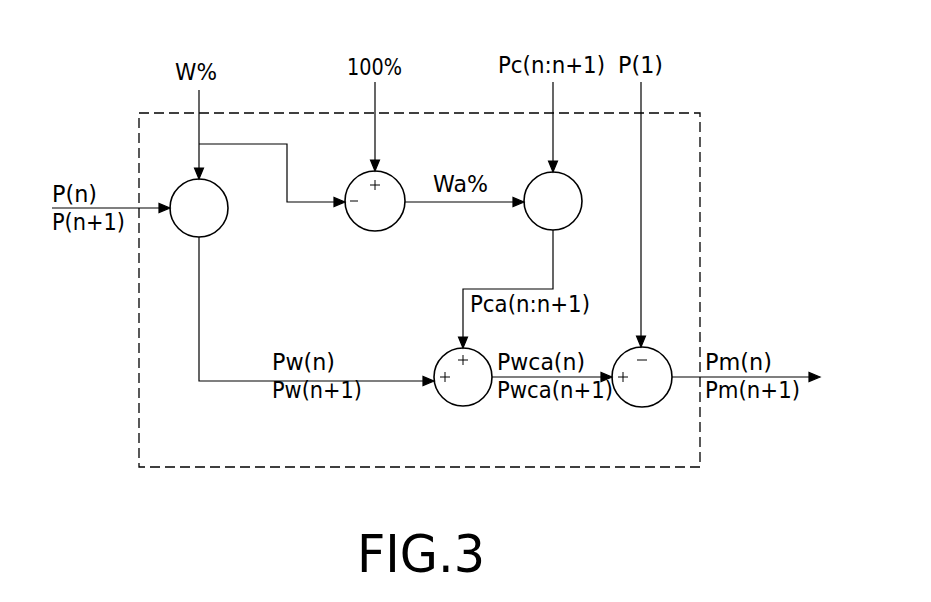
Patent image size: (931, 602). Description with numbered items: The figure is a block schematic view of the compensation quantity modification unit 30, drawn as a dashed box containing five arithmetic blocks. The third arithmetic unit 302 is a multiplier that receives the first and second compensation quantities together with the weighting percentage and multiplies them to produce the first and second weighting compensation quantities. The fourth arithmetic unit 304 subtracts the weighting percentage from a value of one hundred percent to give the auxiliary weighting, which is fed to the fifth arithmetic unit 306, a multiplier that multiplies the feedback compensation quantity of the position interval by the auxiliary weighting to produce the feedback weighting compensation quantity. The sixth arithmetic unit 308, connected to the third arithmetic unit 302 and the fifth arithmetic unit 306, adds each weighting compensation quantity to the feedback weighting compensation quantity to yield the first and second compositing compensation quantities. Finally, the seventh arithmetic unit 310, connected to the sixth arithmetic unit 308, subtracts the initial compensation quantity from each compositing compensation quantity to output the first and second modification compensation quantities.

The compensation quantity modification unit 30 is at (692, 134).
The third arithmetic unit 302 is at (217, 226).
The fourth arithmetic unit 304 is at (372, 232).
The fifth arithmetic unit 306 is at (575, 198).
The sixth arithmetic unit 308 is at (442, 357).
The seventh arithmetic unit 310 is at (658, 358).